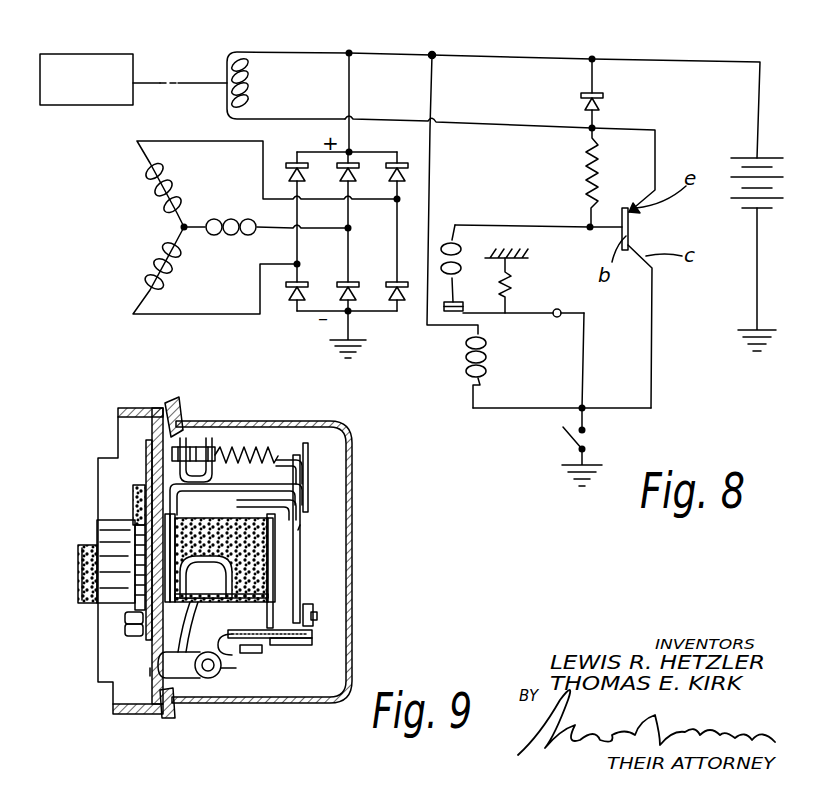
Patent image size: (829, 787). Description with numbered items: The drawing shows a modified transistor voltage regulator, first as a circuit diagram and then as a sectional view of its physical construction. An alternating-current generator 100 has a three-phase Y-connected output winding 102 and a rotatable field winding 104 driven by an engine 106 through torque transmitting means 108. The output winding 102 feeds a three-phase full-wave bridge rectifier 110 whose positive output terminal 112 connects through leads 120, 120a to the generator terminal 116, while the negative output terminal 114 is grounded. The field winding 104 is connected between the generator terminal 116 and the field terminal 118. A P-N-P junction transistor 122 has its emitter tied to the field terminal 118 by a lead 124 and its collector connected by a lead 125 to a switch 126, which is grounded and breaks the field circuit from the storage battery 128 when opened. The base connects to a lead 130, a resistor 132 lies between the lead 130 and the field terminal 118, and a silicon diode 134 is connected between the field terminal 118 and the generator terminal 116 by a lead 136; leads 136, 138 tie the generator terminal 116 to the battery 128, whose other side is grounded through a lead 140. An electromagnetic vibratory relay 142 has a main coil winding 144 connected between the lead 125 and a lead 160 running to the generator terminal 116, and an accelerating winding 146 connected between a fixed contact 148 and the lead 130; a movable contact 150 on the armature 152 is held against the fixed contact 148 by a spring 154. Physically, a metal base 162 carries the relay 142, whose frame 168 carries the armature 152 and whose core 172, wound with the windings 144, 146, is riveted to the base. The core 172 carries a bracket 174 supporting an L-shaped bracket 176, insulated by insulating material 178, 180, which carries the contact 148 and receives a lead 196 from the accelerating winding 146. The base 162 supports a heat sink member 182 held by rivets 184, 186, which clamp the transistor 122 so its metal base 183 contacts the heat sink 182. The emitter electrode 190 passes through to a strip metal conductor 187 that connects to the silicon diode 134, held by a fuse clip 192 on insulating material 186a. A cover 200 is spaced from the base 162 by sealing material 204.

In FIG. 8, the alternating-current generator 100 is at (265, 227).
In FIG. 8, the output winding 102 is at (165, 203).
In FIG. 8, the field winding 104 is at (250, 93).
In FIG. 8, the engine 106 is at (78, 70).
In FIG. 8, the torque transmitting means 108 is at (161, 80).
In FIG. 8, the bridge rectifier 110 is at (347, 231).
In FIG. 8, the positive output terminal 112 is at (352, 152).
In FIG. 8, the negative output terminal 114 is at (350, 314).
In FIG. 8, the generator terminal 116 is at (436, 57).
In FIG. 8, the field terminal 118 is at (596, 128).
In FIG. 8, the lead 120 is at (353, 98).
In FIG. 8, the lead 120a is at (381, 52).
In FIG. 8, the transistor 122 is at (632, 227).
In FIG. 9, the transistor 122 is at (98, 536).
In FIG. 8, the lead 124 is at (657, 149).
In FIG. 8, the lead 125 is at (540, 410).
In FIG. 8, the switch 126 is at (587, 443).
In FIG. 8, the storage battery 128 is at (761, 156).
In FIG. 8, the lead 130 is at (528, 224).
In FIG. 9, the lead 130 is at (206, 583).
In FIG. 8, the resistor 132 is at (586, 160).
In FIG. 9, the resistor 132 is at (221, 599).
In FIG. 8, the silicon diode 134 is at (602, 97).
In FIG. 9, the silicon diode 134 is at (222, 669).
In FIG. 8, the lead 136 is at (552, 62).
In FIG. 8, the lead 138 is at (715, 61).
In FIG. 8, the lead 140 is at (756, 291).
In FIG. 8, the relay 142 is at (443, 374).
In FIG. 9, the relay 142 is at (236, 500).
In FIG. 8, the main coil winding 144 is at (490, 367).
In FIG. 9, the main coil winding 144 is at (263, 512).
In FIG. 8, the accelerating winding 146 is at (460, 238).
In FIG. 9, the accelerating winding 146 is at (254, 544).
In FIG. 8, the fixed contact 148 is at (458, 305).
In FIG. 9, the fixed contact 148 is at (318, 619).
In FIG. 8, the movable contact 150 is at (455, 315).
In FIG. 9, the movable contact 150 is at (313, 612).
In FIG. 8, the armature 152 is at (520, 312).
In FIG. 9, the armature 152 is at (300, 528).
In FIG. 8, the spring 154 is at (508, 286).
In FIG. 9, the spring 154 is at (238, 450).
In FIG. 8, the lead 160 is at (431, 184).
In FIG. 9, the lead 160 is at (198, 627).
In FIG. 9, the metal base 162 is at (153, 406).
In FIG. 9, the frame 168 is at (276, 490).
In FIG. 9, the core 172 is at (282, 572).
In FIG. 9, the bracket 174 is at (275, 615).
In FIG. 9, the L-shaped bracket 176 is at (316, 640).
In FIG. 9, the insulating material 178 is at (268, 652).
In FIG. 9, the insulating material 180 is at (287, 645).
In FIG. 9, the heat sink member 182 is at (148, 455).
In FIG. 9, the metal base 183 is at (134, 540).
In FIG. 9, the rivet 184 is at (136, 498).
In FIG. 9, the rivet 186 is at (127, 629).
In FIG. 9, the insulating material 186a is at (125, 616).
In FIG. 9, the strip metal conductor 187 is at (150, 672).
In FIG. 9, the emitter electrode 190 is at (220, 558).
In FIG. 9, the fuse clip 192 is at (195, 690).
In FIG. 9, the lead 196 is at (224, 626).
In FIG. 9, the cover 200 is at (355, 470).
In FIG. 9, the sealing material 204 is at (162, 707).